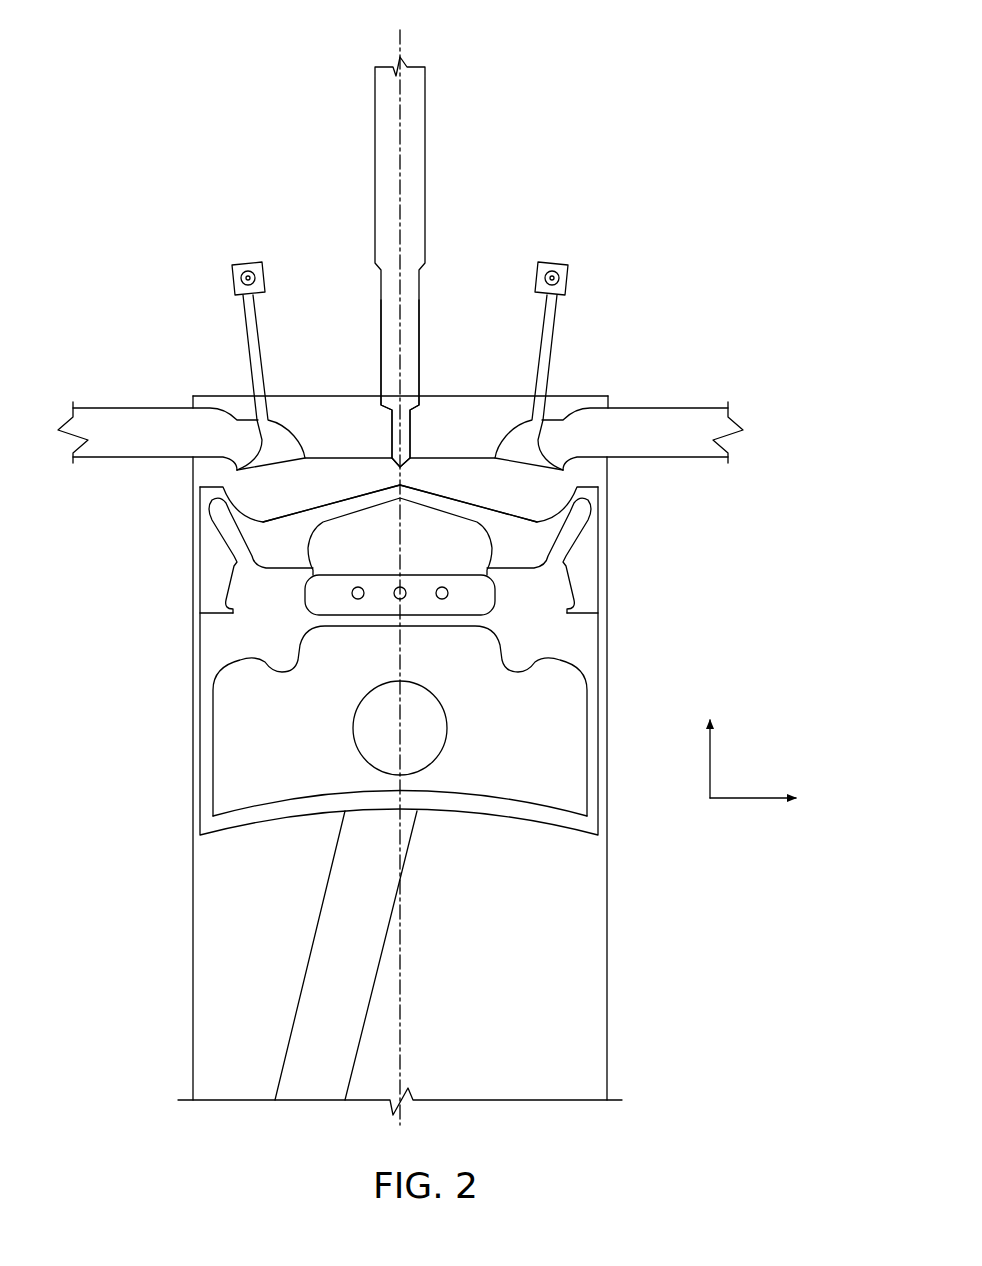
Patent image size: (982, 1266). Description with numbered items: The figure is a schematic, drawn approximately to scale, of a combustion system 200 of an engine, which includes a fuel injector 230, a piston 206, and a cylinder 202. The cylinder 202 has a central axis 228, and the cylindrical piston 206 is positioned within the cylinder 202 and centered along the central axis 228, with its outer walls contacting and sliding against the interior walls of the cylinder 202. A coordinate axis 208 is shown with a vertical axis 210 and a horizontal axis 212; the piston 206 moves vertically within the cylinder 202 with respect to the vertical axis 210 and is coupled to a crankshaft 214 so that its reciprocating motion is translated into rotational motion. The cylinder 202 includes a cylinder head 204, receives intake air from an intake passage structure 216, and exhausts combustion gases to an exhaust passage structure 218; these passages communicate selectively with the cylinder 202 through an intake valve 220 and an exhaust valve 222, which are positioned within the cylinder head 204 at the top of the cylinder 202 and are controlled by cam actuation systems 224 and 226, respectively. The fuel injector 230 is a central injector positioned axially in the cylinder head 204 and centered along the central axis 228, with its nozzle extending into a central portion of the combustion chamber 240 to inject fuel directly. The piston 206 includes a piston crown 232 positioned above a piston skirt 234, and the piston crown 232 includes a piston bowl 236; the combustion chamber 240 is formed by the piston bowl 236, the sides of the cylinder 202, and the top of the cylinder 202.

The combustion system 200 is at (646, 44).
The cylinder 202 is at (607, 845).
The cylinder head 204 is at (445, 400).
The piston 206 is at (588, 627).
The coordinate axis 208 is at (723, 832).
The vertical axis 210 is at (709, 757).
The horizontal axis 212 is at (750, 803).
The crankshaft 214 is at (368, 1012).
The intake passage structure 216 is at (673, 405).
The exhaust passage structure 218 is at (117, 405).
The intake valve 220 is at (551, 348).
The exhaust valve 222 is at (245, 333).
The cam actuation system 224 is at (568, 278).
The cam actuation system 226 is at (263, 267).
The central axis 228 is at (405, 58).
The fuel injector 230 is at (428, 165).
The piston crown 232 is at (587, 542).
The piston skirt 234 is at (588, 710).
The piston bowl 236 is at (306, 502).
The combustion chamber 240 is at (535, 497).